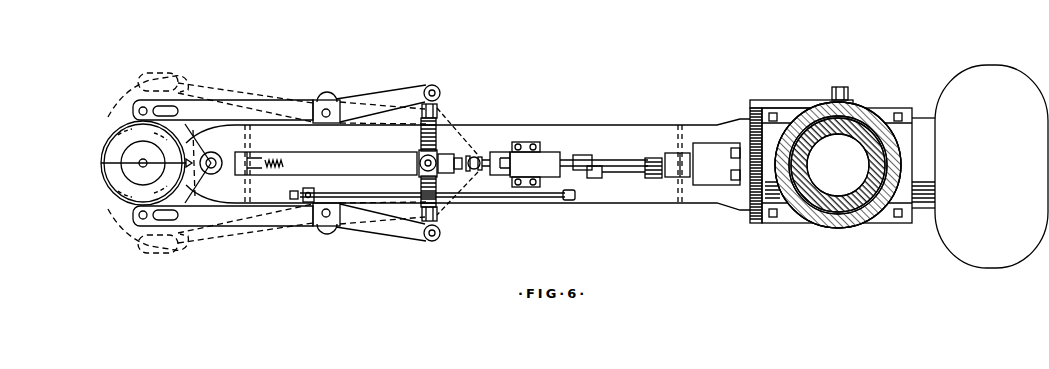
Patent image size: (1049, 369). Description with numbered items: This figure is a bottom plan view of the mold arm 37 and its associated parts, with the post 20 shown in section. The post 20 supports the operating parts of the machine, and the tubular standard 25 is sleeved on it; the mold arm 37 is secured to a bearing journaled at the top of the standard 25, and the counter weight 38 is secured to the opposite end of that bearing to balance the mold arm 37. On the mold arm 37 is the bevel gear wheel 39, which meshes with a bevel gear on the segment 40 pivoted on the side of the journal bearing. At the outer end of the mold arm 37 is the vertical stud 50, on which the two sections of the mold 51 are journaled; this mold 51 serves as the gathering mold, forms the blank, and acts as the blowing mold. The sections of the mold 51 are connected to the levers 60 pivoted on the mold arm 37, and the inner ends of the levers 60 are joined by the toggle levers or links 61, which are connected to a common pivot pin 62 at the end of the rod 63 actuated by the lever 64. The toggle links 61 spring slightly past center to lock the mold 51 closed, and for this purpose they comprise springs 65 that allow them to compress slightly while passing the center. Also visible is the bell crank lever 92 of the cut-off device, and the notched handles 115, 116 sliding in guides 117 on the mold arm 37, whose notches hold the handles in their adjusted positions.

The post 20 is at (867, 135).
The tubular standard 25 is at (857, 104).
The mold arm 37 is at (538, 132).
The counter weight 38 is at (991, 166).
The bevel gear wheel 39 is at (756, 112).
The segment 40 is at (787, 98).
The vertical stud 50 is at (216, 157).
The mold 51 is at (113, 148).
The levers 60 is at (226, 113).
The toggle levers or links 61 is at (440, 113).
The common pivot pin 62 is at (441, 152).
The rod 63 is at (613, 163).
The lever 64 is at (666, 178).
The springs 65 is at (420, 140).
The bell crank lever 92 is at (275, 158).
The notched handle 115 is at (582, 156).
The notched handle 116 is at (597, 177).
The guides 117 is at (528, 168).